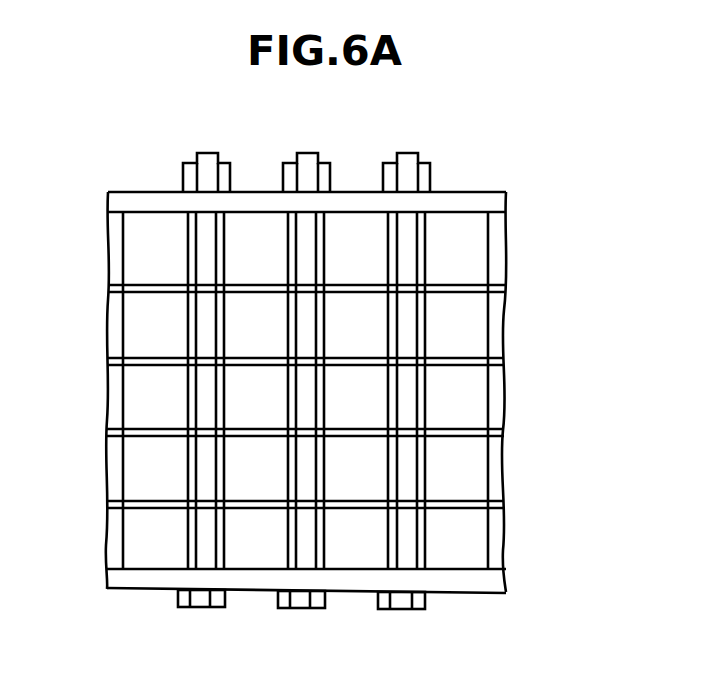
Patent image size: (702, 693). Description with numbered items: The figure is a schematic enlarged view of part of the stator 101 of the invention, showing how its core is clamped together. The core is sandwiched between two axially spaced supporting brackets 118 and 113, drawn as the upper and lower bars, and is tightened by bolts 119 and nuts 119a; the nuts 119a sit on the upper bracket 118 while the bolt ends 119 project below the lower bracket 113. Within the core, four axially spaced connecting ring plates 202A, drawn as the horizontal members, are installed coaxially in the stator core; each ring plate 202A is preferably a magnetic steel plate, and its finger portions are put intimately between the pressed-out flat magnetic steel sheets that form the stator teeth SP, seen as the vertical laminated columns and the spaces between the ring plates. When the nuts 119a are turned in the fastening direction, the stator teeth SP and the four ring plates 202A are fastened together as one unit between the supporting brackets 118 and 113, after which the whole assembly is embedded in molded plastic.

The stator 101 is at (316, 388).
The supporting bracket 118 is at (158, 200).
The nut 119a is at (225, 172).
The bolt 119 is at (203, 608).
The supporting bracket 113 is at (133, 575).
The connecting ring plate 202A is at (457, 285).
The stator tooth SP is at (148, 252).